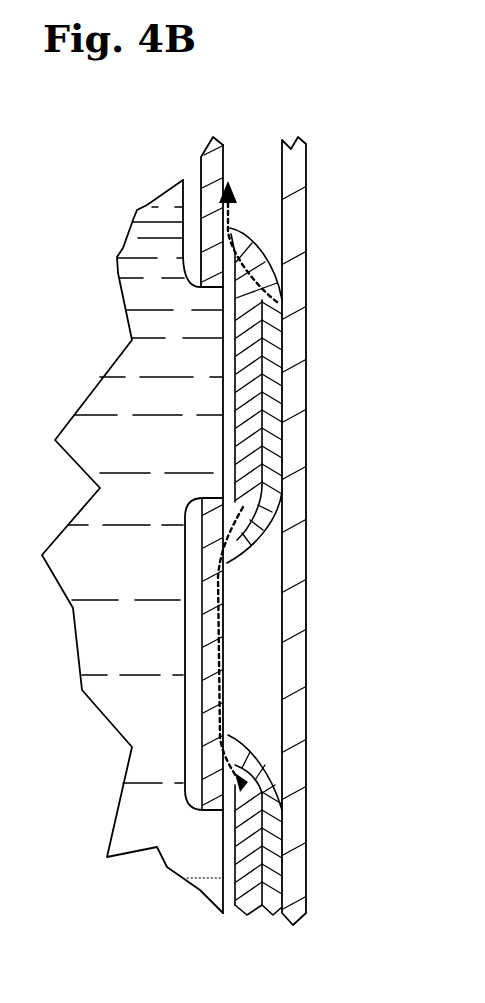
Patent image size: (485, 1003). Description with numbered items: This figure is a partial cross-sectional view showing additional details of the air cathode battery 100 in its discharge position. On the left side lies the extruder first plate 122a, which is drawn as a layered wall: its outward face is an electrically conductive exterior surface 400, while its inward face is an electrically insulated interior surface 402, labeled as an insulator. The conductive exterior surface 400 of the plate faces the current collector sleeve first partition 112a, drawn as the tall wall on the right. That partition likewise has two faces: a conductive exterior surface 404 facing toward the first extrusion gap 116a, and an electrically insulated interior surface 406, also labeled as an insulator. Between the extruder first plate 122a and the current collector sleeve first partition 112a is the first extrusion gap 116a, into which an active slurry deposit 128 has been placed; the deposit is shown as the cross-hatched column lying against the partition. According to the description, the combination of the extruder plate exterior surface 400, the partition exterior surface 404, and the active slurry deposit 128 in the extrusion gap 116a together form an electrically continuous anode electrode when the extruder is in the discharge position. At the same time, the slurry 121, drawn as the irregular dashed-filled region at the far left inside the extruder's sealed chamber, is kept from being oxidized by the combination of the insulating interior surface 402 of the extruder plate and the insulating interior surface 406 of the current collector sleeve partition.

The air cathode battery 100 is at (275, 64).
The slurry 121 is at (167, 232).
The extruder first plate 122a is at (218, 118).
The electrically conductive exterior surface 400 is at (224, 174).
The active slurry deposit 128 is at (273, 340).
The conductive exterior surface 404 is at (250, 413).
The first extrusion gap 116a is at (250, 635).
The electrically insulated interior surface 402 is at (193, 776).
The electrically insulated interior surface 406 is at (231, 905).
The current collector sleeve first partition 112a is at (278, 941).